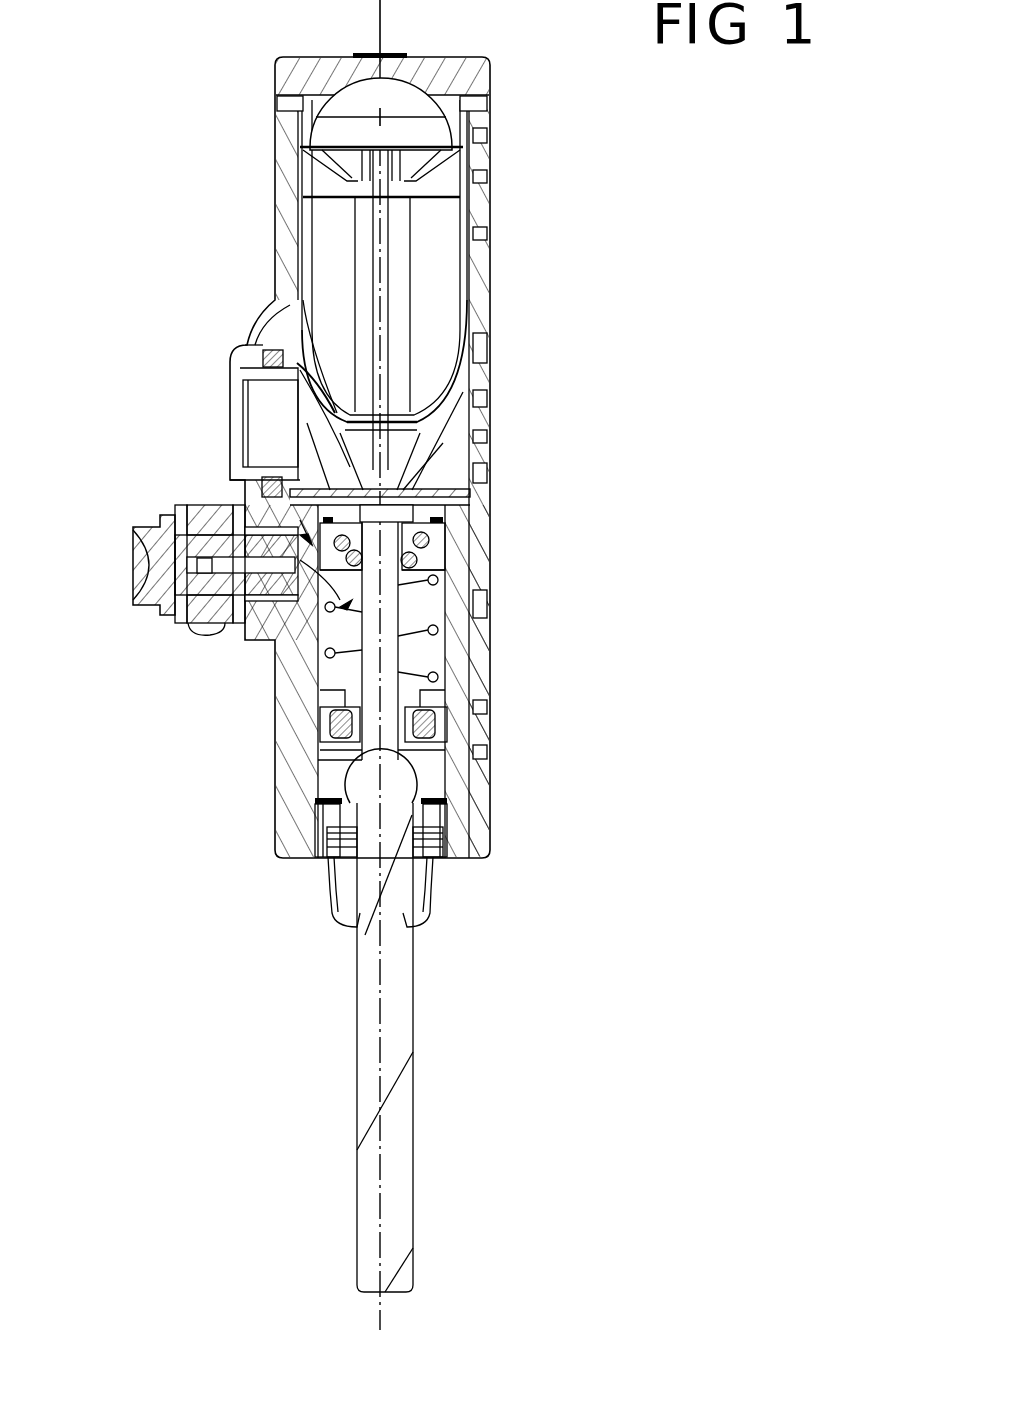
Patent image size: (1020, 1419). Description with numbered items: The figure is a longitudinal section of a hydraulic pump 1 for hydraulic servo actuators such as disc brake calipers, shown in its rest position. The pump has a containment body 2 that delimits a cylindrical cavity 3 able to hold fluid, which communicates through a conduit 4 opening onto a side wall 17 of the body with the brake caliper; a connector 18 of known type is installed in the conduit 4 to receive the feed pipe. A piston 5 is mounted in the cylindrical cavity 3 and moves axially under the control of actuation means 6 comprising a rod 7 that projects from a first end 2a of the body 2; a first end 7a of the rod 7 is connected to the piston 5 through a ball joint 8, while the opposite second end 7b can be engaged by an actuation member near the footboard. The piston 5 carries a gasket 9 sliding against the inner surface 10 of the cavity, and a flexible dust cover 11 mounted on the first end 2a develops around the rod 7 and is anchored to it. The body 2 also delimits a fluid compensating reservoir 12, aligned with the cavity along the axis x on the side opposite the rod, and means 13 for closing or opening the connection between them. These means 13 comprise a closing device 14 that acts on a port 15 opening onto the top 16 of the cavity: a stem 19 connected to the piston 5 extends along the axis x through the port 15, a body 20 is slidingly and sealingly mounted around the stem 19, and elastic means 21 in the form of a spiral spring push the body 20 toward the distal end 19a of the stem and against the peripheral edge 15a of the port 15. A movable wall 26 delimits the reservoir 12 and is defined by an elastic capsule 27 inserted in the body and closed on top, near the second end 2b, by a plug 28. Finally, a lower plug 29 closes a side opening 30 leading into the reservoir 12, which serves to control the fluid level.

The hydraulic pump 1 is at (637, 248).
The containment body 2 is at (495, 510).
The first end 2a is at (482, 862).
The second end 2b is at (490, 135).
The cylindrical cavity 3 is at (452, 630).
The conduit 4 is at (330, 605).
The piston 5 is at (470, 772).
The actuation means 6 is at (432, 1035).
The rod 7 is at (397, 1122).
The first end 7a is at (440, 800).
The second end 7b is at (402, 1275).
The ball joint 8 is at (320, 778).
The gasket 9 is at (440, 745).
The inner surface 10 is at (445, 667).
The flexible dust cover 11 is at (335, 908).
The fluid compensating reservoir 12 is at (412, 440).
The means for closing or opening the connection 13 is at (465, 536).
The closing device 14 is at (305, 635).
The port 15 is at (418, 446).
The peripheral edge 15a is at (230, 417).
The top 16 is at (462, 495).
The side wall 17 is at (300, 750).
The connector 18 is at (190, 503).
The stem 19 is at (492, 577).
The distal end 19a is at (315, 330).
The body 20 is at (240, 503).
The elastic means 21 is at (442, 647).
The movable wall 26 is at (400, 478).
The elastic capsule 27 is at (462, 202).
The plug 28 is at (485, 70).
The lower plug 29 is at (300, 437).
The side opening 30 is at (245, 352).
The axis x is at (385, 10).